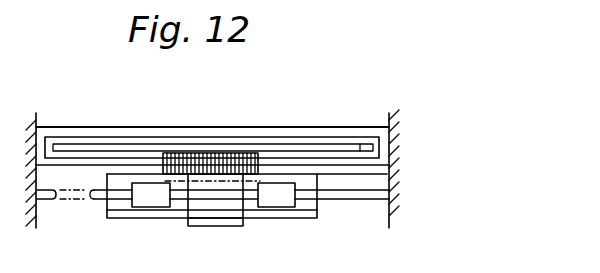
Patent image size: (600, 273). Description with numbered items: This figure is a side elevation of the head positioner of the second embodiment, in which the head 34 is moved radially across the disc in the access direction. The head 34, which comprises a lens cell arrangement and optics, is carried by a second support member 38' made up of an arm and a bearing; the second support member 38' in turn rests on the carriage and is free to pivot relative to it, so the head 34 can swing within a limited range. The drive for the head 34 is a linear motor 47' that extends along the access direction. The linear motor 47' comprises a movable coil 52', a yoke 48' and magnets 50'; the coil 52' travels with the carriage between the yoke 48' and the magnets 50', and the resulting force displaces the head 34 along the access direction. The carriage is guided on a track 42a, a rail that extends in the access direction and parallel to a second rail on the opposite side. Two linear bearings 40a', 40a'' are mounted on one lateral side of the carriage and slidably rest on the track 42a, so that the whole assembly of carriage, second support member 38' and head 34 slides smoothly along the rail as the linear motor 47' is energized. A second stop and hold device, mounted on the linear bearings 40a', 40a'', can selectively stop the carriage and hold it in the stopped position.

The linear motor 47' is at (212, 120).
The yoke 48' is at (217, 121).
The magnets 50' is at (331, 118).
The movable coil 52' is at (210, 129).
The second support member 38' is at (232, 217).
The head 34 is at (228, 226).
The linear bearing 40a' is at (159, 222).
The linear bearing 40a'' is at (288, 222).
The track 42a is at (355, 194).